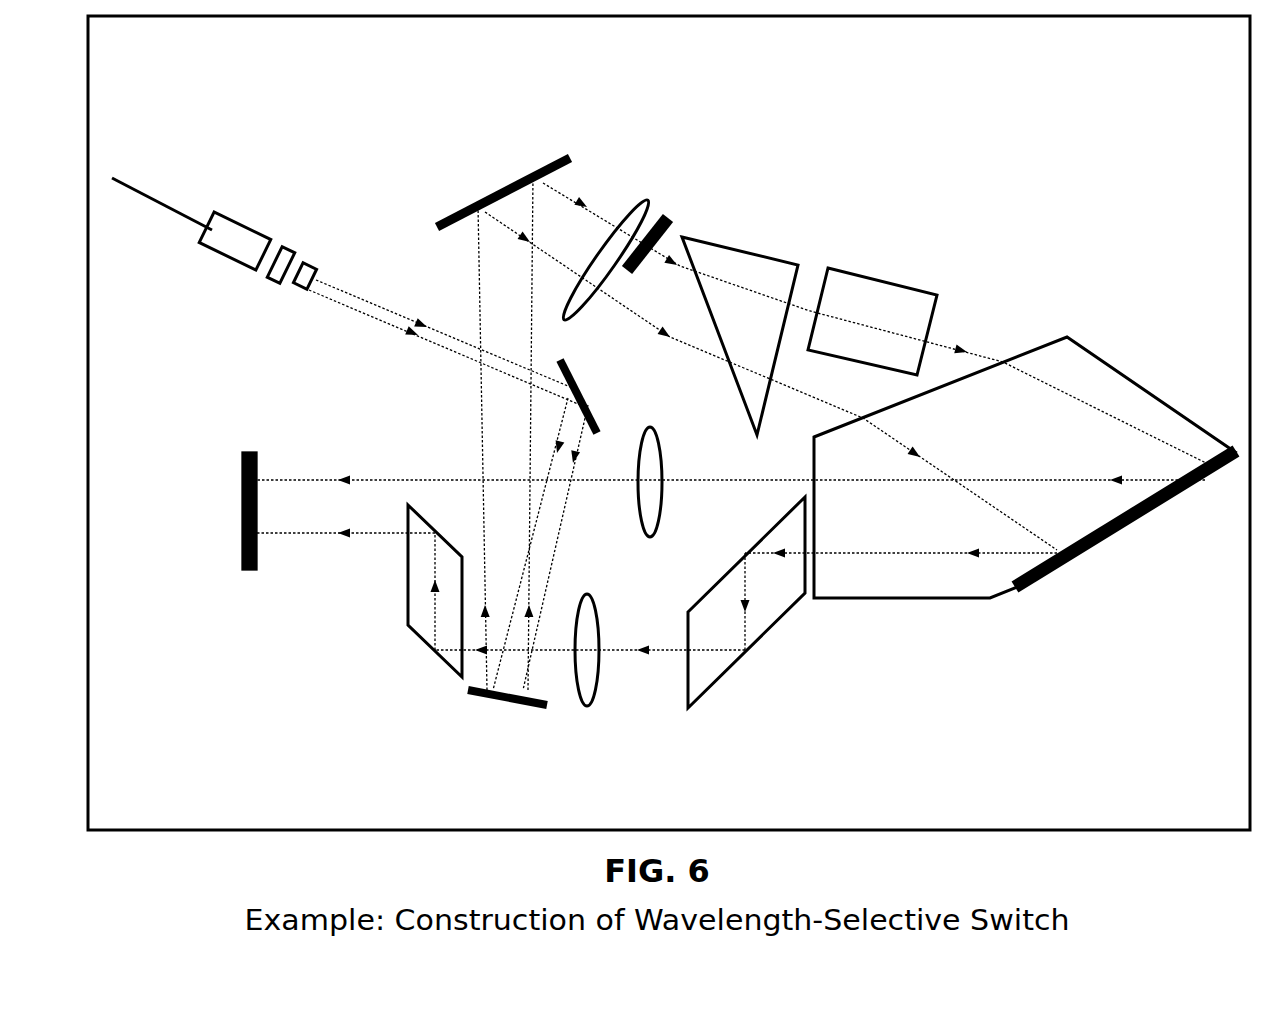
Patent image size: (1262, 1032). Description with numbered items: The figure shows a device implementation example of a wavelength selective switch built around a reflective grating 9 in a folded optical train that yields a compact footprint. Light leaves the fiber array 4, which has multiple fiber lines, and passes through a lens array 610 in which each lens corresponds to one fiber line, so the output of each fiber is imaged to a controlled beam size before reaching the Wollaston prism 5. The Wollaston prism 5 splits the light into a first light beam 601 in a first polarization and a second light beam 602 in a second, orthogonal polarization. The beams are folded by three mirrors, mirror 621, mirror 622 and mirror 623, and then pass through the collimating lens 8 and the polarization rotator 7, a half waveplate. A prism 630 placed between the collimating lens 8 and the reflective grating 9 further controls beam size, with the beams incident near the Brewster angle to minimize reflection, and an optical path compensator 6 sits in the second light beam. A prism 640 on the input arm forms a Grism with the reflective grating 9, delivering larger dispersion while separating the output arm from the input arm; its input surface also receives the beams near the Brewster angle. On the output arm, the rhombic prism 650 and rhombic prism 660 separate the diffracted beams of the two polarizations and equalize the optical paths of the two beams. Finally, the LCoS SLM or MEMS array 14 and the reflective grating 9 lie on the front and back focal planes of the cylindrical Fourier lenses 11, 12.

The fiber array 4 is at (221, 234).
The lens array 610 is at (290, 240).
The Wollaston prism 5 is at (293, 291).
The first light beam 601 is at (1107, 238).
The second light beam 602 is at (418, 342).
The mirror 621 is at (630, 383).
The mirror 622 is at (490, 716).
The mirror 623 is at (482, 188).
The collimating lens 8 is at (629, 193).
The polarization rotator 7 is at (673, 211).
The prism 630 is at (765, 247).
The optical path compensator 6 is at (889, 280).
The prism 640 is at (1146, 372).
The reflective grating 9 is at (1126, 534).
The LCoS SLM or MEMS array 14 is at (234, 524).
The rhombic prism 660 is at (409, 638).
The rhombic prism 650 is at (781, 631).
The cylindrical Fourier lens 11 is at (651, 544).
The cylindrical Fourier lens 12 is at (606, 692).